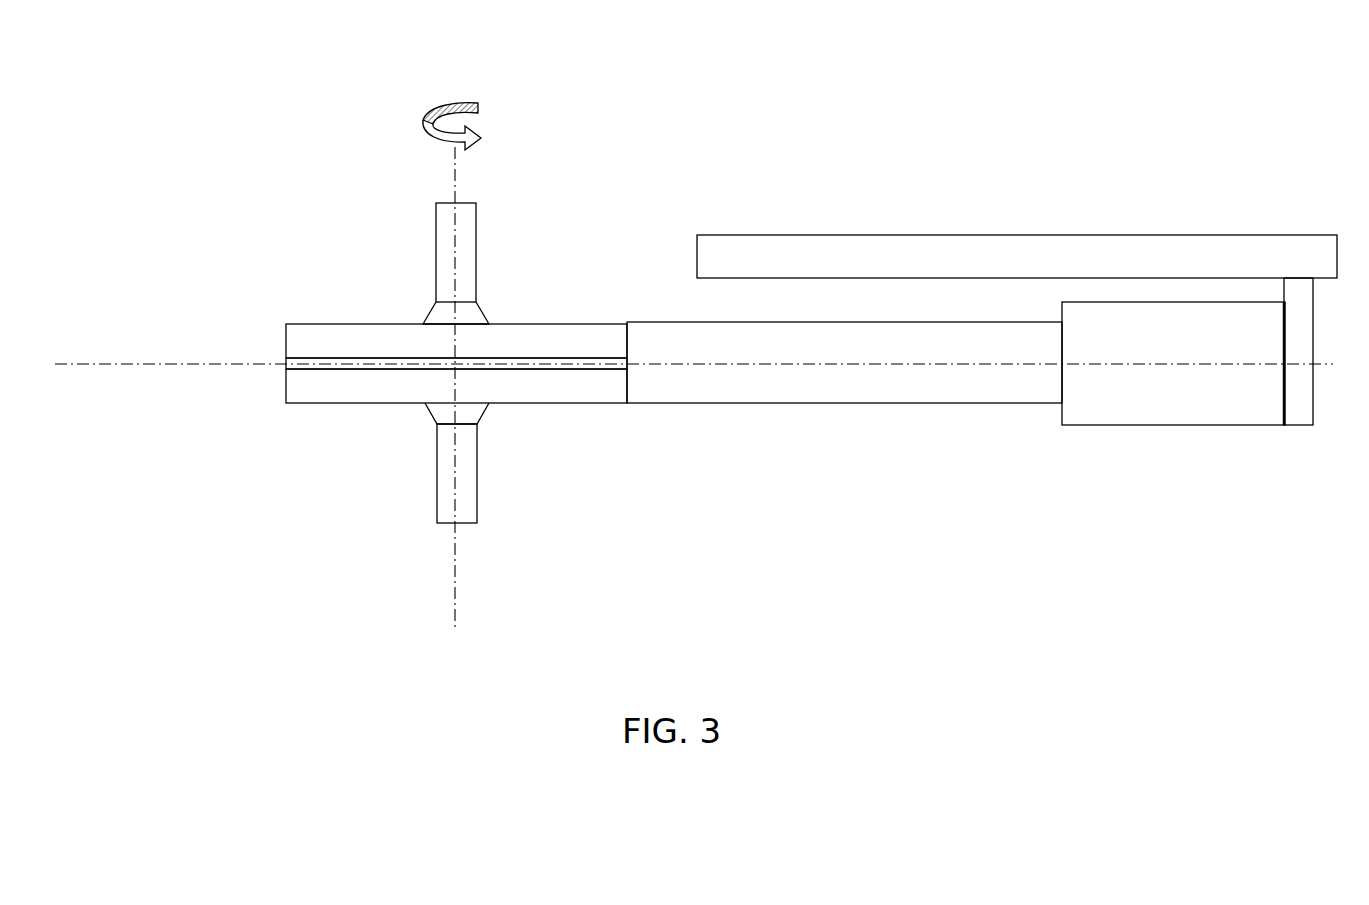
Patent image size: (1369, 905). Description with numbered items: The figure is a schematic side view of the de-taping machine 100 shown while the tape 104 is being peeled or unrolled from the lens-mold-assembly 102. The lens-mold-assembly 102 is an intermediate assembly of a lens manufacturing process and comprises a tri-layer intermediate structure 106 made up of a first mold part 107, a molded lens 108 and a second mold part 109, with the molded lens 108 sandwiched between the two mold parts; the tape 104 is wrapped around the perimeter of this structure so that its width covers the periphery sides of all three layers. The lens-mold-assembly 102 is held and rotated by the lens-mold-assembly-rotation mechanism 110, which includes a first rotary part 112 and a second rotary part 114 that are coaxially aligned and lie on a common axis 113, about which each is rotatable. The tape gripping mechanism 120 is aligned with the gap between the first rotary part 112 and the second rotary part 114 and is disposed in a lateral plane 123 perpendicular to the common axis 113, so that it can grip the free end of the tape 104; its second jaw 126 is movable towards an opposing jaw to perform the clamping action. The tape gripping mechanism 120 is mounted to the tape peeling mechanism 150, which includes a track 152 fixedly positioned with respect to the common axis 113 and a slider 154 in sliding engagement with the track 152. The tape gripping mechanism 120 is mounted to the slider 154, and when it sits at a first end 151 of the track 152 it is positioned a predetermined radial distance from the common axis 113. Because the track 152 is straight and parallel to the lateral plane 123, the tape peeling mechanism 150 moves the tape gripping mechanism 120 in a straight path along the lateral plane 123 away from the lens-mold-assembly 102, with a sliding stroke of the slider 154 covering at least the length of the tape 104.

The de-taping machine 100 is at (1038, 76).
The lens-mold-assembly 102 is at (373, 354).
The tape 104 is at (712, 401).
The tri-layer intermediate structure 106 is at (373, 373).
The first mold part 107 is at (300, 343).
The molded lens 108 is at (293, 370).
The second mold part 109 is at (411, 408).
The lens-mold-assembly-rotation mechanism 110 is at (553, 356).
The first rotary part 112 is at (467, 275).
The common axis 113 is at (453, 172).
The second rotary part 114 is at (458, 475).
The tape gripping mechanism 120 is at (1017, 473).
The lateral plane 123 is at (95, 366).
The second jaw 126 is at (1227, 407).
The tape peeling mechanism 150 is at (1186, 228).
The first end 151 is at (717, 224).
The track 152 is at (972, 248).
The slider 154 is at (1292, 352).